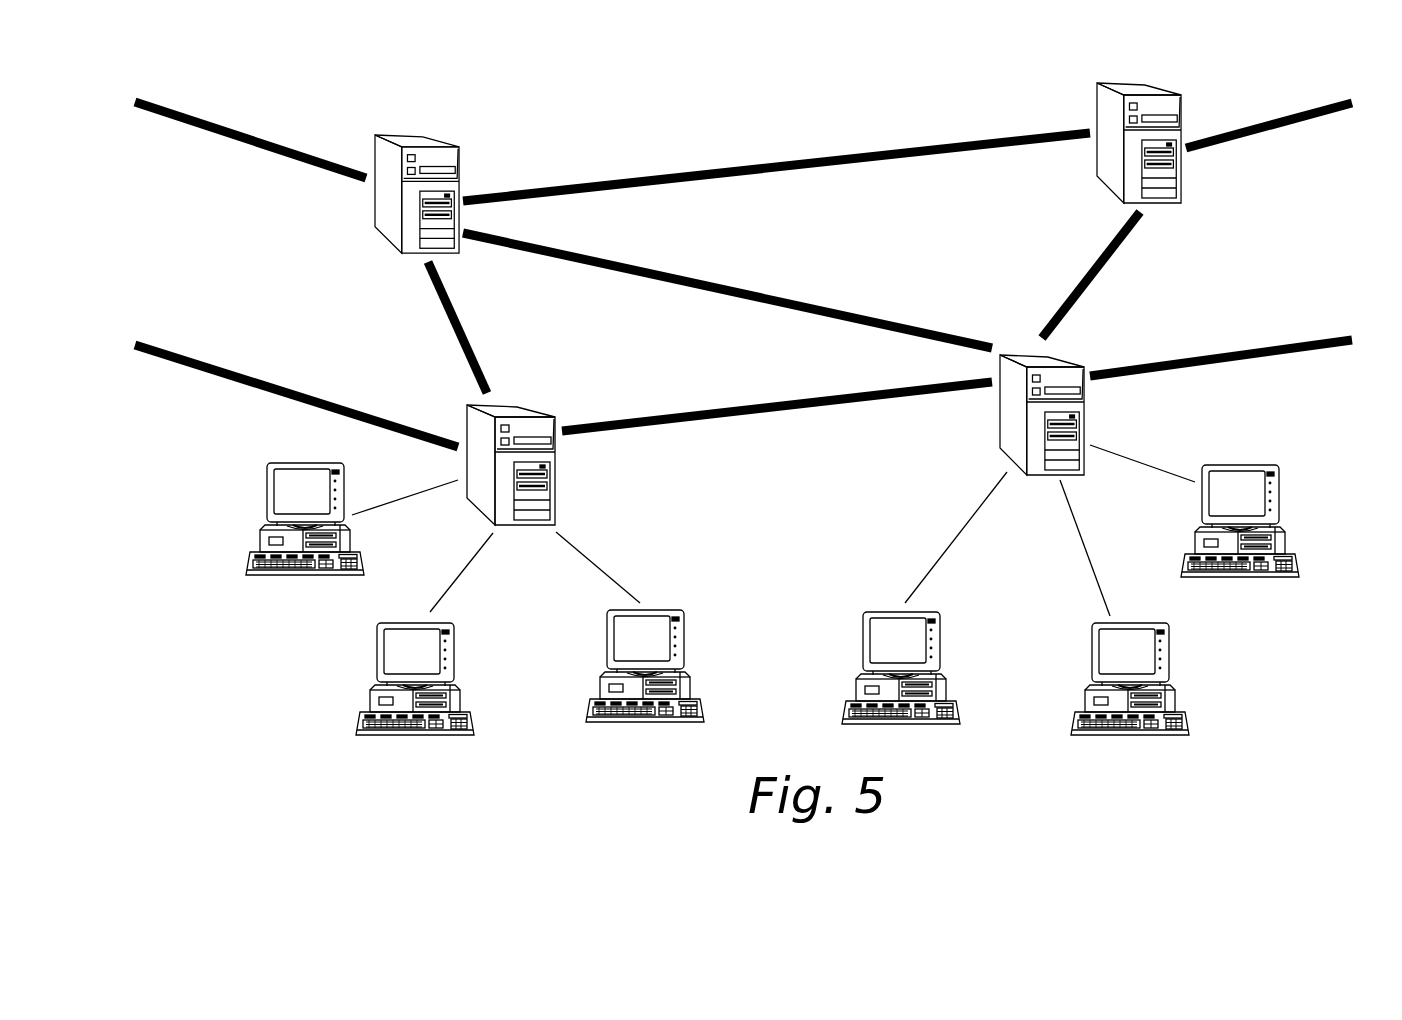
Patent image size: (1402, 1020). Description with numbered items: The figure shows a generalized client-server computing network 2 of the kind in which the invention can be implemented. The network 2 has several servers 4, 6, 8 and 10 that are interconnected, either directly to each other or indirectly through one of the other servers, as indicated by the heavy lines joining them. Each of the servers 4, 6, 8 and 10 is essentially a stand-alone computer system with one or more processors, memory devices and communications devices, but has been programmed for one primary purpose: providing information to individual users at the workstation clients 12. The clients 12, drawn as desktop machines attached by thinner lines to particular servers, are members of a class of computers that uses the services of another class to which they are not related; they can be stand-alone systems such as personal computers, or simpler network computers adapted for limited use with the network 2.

The client-server computing network 2 is at (272, 738).
The server 4 is at (550, 475).
The server 6 is at (1010, 418).
The server 8 is at (388, 196).
The server 10 is at (1105, 85).
The workstation client 12 is at (430, 741).